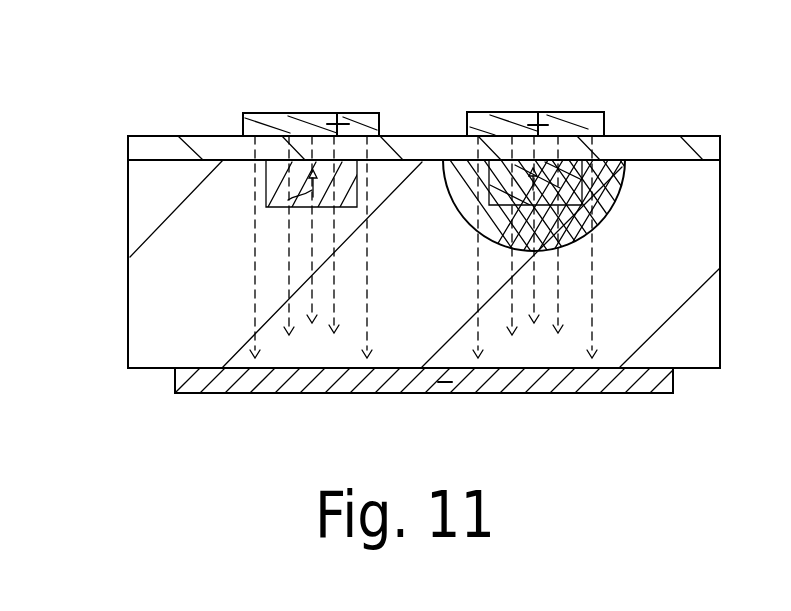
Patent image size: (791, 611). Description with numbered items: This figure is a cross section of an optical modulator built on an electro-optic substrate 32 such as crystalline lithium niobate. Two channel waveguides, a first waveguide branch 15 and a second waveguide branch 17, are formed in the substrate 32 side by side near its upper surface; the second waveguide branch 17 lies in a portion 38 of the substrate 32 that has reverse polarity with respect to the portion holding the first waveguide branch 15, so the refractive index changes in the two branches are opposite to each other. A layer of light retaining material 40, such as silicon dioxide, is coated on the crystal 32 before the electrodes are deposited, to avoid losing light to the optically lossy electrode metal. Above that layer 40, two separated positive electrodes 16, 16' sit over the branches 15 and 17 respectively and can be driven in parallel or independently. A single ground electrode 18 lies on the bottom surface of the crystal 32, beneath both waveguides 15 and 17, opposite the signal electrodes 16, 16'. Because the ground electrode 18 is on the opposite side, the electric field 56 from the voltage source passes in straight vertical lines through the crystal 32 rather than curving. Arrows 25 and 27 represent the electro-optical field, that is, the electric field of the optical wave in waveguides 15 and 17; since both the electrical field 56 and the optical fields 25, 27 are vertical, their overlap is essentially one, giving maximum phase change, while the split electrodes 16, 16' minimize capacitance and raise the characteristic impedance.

The layer of light retaining material 40 is at (140, 145).
The positive electrode 16 is at (291, 89).
The positive electrode 16' is at (543, 89).
The arrow representing electro-optical field 27 is at (472, 171).
The arrow representing electro-optical field 25 is at (266, 207).
The first waveguide branch 15 is at (357, 190).
The second waveguide branch 17 is at (590, 182).
The reverse polarity portion of crystalline substrate 38 is at (465, 213).
The electric field 56 is at (254, 305).
The electro-optic substrate 32 is at (192, 355).
The ground electrode 18 is at (438, 394).